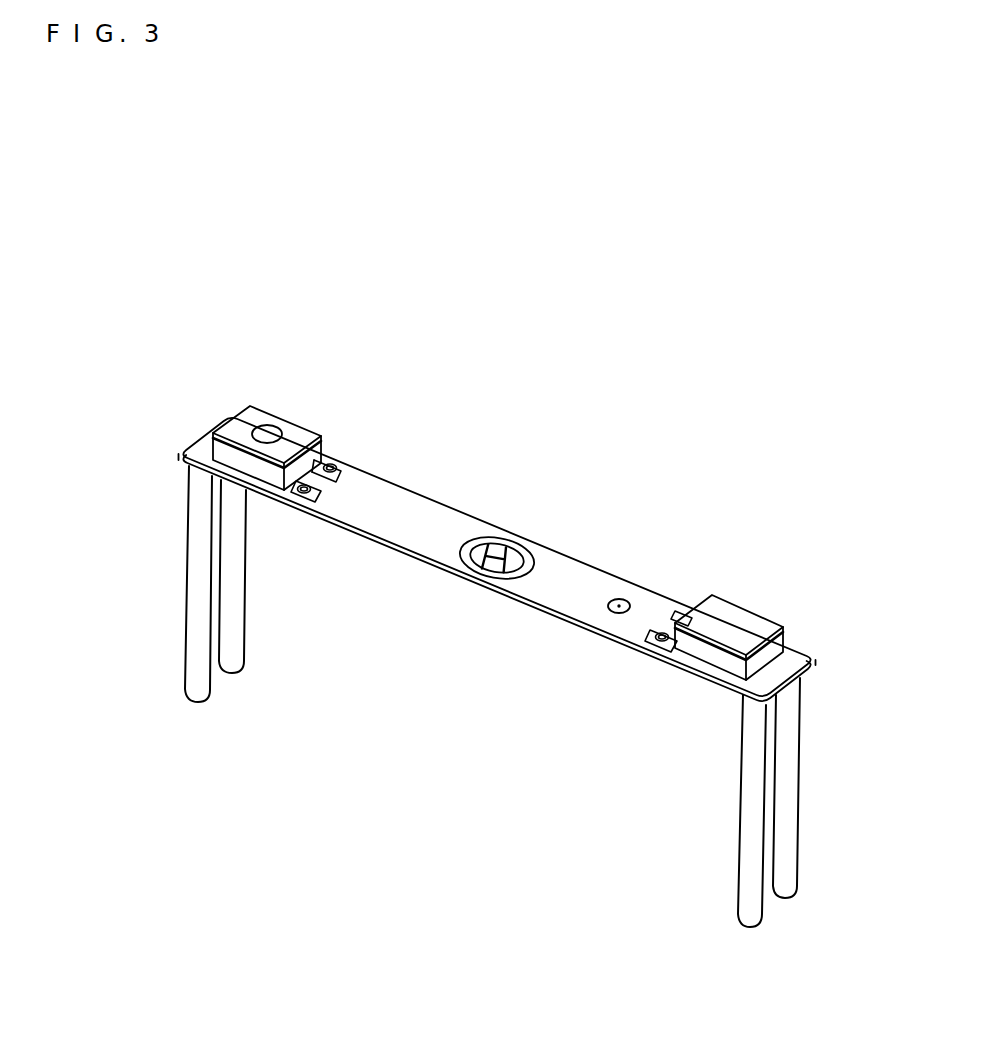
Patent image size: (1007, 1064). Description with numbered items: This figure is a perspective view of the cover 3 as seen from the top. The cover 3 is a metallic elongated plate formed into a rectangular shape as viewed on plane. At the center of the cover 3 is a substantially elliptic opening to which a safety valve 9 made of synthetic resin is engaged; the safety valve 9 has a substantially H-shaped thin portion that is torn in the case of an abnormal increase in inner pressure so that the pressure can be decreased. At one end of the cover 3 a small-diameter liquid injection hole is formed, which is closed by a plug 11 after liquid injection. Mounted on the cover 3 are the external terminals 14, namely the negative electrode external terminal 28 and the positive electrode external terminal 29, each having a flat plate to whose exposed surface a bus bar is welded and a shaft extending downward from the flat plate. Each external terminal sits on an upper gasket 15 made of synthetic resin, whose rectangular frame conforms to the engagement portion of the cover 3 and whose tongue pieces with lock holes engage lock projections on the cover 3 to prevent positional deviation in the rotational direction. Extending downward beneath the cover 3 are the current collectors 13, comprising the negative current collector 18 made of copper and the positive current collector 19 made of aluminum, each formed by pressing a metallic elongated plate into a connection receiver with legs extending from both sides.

The cover 3 is at (410, 502).
The safety valve 9 is at (497, 549).
The plug 11 is at (620, 600).
The current collectors 13 is at (492, 696).
The external terminals 14 is at (526, 523).
The upper gasket 15 is at (313, 457).
The negative current collector 18 is at (247, 605).
The positive current collector 19 is at (740, 833).
The negative electrode external terminal 28 is at (297, 436).
The positive electrode external terminal 29 is at (740, 618).